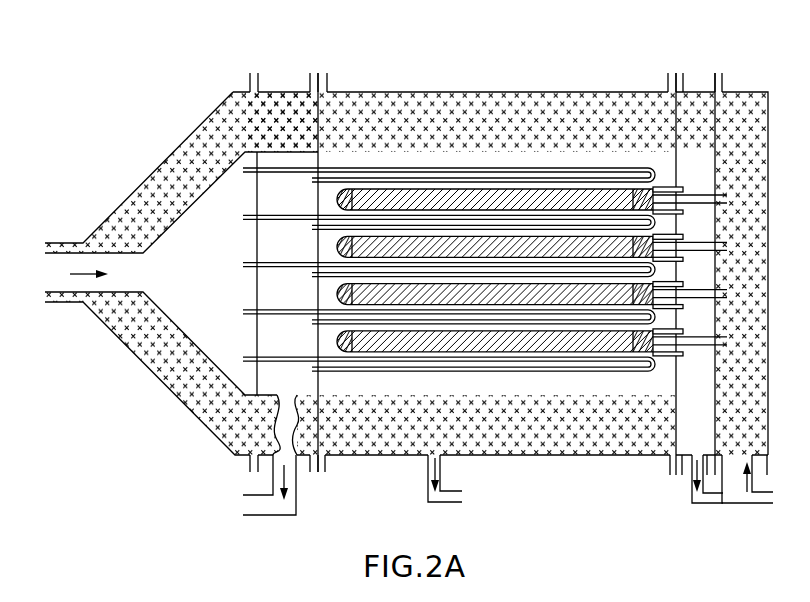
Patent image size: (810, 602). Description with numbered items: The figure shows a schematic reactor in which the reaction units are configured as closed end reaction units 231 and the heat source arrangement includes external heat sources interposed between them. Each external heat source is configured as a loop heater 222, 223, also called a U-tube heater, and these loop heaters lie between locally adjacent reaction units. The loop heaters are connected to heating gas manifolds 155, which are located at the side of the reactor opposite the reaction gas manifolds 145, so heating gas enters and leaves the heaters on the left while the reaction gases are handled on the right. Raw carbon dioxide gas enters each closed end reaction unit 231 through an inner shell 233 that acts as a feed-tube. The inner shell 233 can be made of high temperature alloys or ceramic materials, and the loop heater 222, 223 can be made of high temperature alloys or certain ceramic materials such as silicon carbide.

The heating gas manifold 155 is at (285, 162).
The loop heater 222 is at (508, 160).
The loop heater 223 is at (550, 167).
The closed end reaction unit 231 is at (617, 188).
The inner shell 233 is at (692, 192).
The reaction gas manifold 145 is at (702, 177).